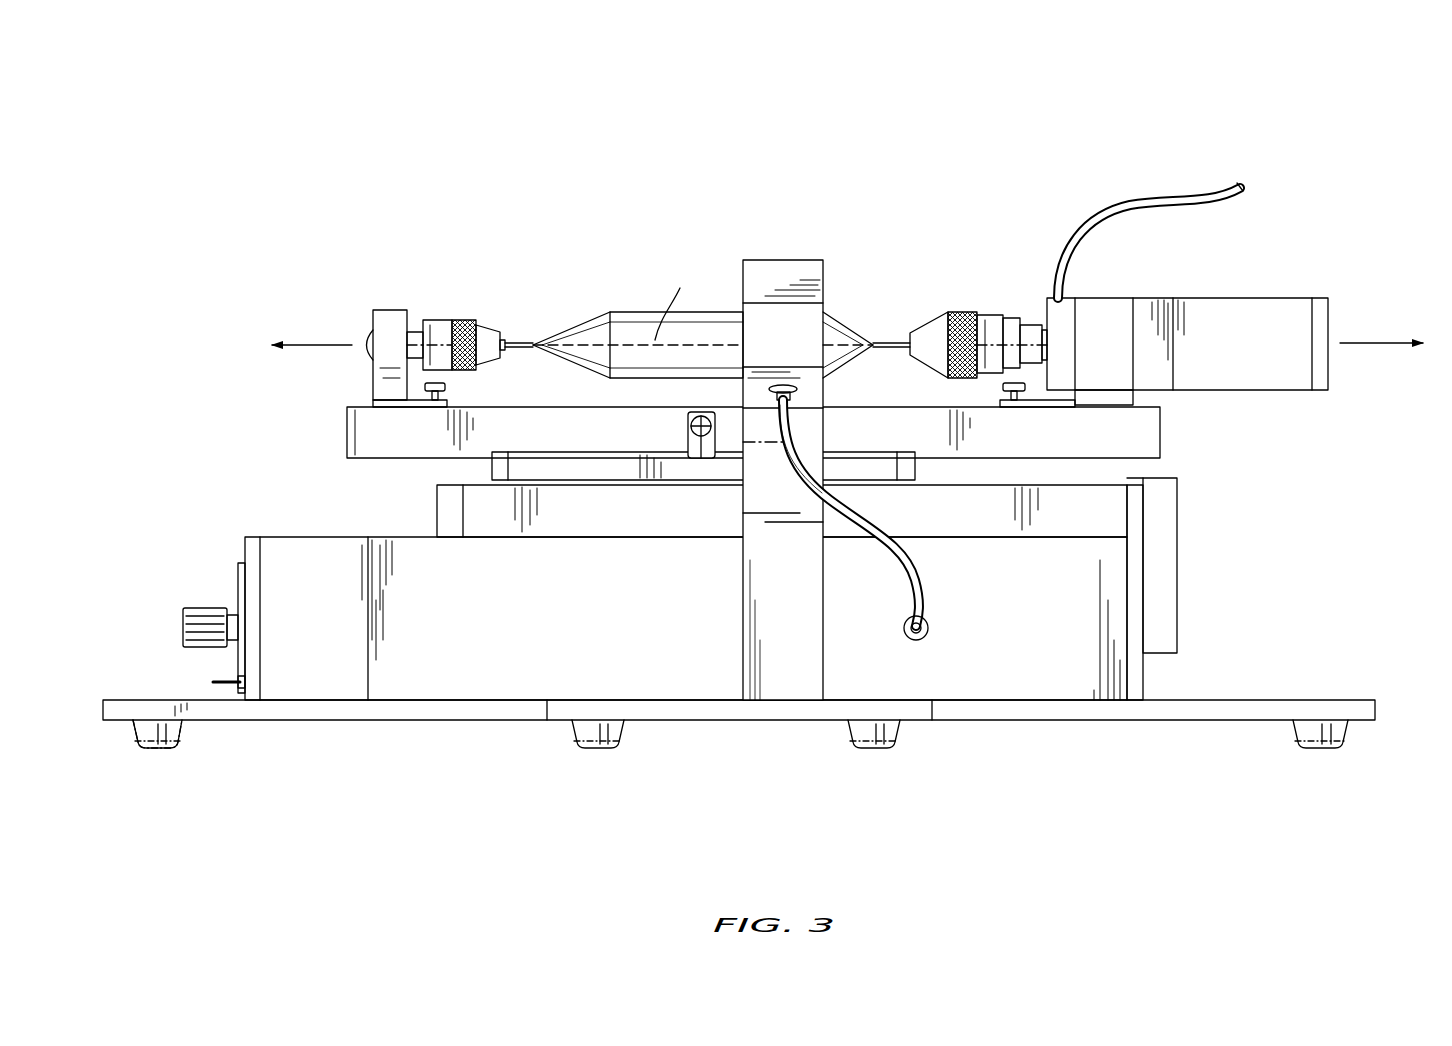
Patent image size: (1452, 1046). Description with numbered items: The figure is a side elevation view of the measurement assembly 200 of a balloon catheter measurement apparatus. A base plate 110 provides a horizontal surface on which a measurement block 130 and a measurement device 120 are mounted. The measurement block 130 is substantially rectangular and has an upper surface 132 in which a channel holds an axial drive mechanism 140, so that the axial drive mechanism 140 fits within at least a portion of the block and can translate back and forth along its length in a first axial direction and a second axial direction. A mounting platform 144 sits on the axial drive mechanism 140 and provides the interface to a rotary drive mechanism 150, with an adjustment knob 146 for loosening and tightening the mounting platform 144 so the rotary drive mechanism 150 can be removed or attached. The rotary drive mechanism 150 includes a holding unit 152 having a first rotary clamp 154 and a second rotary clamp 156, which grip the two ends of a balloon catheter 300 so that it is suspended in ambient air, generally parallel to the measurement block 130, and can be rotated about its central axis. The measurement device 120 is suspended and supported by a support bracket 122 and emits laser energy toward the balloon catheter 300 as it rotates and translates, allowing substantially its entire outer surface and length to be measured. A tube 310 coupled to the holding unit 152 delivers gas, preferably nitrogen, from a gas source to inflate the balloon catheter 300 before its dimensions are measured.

The base plate 110 is at (153, 708).
The measurement device 120 is at (794, 270).
The support bracket 122 is at (803, 700).
The measurement block 130 is at (503, 637).
The upper surface 132 is at (272, 537).
The axial drive mechanism 140 is at (1100, 500).
The mounting platform 144 is at (492, 465).
The adjustment knob 146 is at (706, 460).
The rotary drive mechanism 150 is at (1148, 428).
The holding unit 152 is at (1115, 302).
The first rotary clamp 154 is at (927, 327).
The second rotary clamp 156 is at (440, 328).
The measurement assembly 200 is at (777, 162).
The balloon catheter 300 is at (632, 310).
The tube 310 is at (1108, 205).